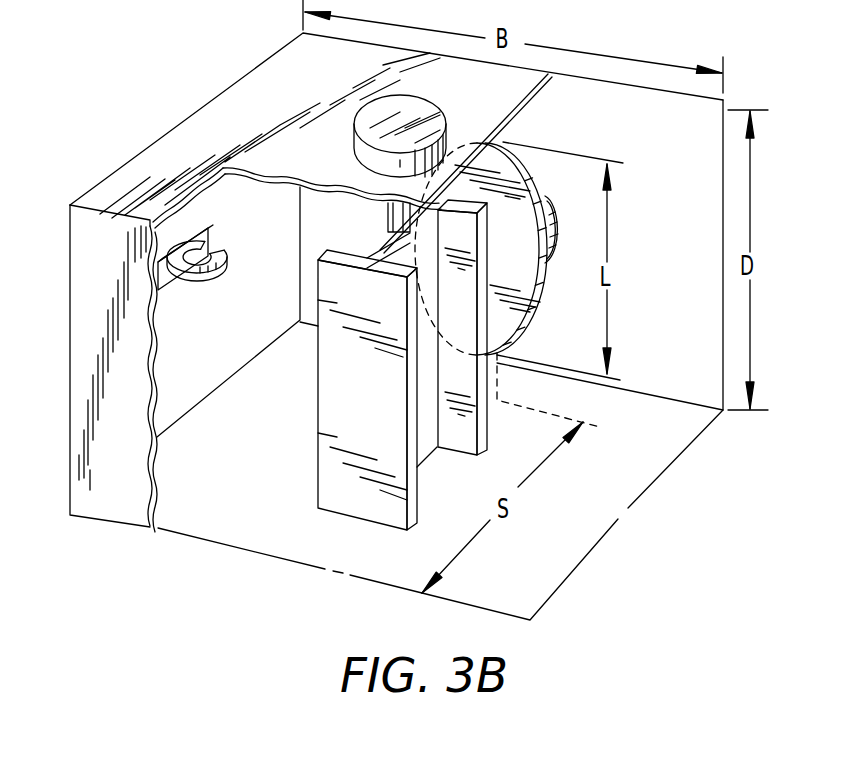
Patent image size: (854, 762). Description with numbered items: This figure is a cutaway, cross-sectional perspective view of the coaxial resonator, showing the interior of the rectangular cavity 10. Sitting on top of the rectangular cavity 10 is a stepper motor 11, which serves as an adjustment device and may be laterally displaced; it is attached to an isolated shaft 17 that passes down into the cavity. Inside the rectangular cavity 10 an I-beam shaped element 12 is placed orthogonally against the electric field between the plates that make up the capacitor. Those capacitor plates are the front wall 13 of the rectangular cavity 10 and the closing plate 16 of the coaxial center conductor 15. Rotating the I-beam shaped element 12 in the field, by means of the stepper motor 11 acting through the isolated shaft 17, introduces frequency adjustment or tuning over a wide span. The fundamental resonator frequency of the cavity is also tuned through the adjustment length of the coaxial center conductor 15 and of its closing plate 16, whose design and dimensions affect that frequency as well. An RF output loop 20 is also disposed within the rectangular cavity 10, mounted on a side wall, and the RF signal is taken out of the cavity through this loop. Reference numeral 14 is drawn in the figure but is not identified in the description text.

The rectangular cavity 10 is at (190, 107).
The stepper motor 11 is at (418, 112).
The I-beam shaped element 12 is at (328, 408).
The front wall 13 is at (85, 400).
The side wall 14 is at (725, 202).
The coaxial center conductor 15 is at (548, 212).
The closing plate 16 is at (543, 287).
The isolated shaft 17 is at (395, 220).
The RF output loop 20 is at (222, 272).